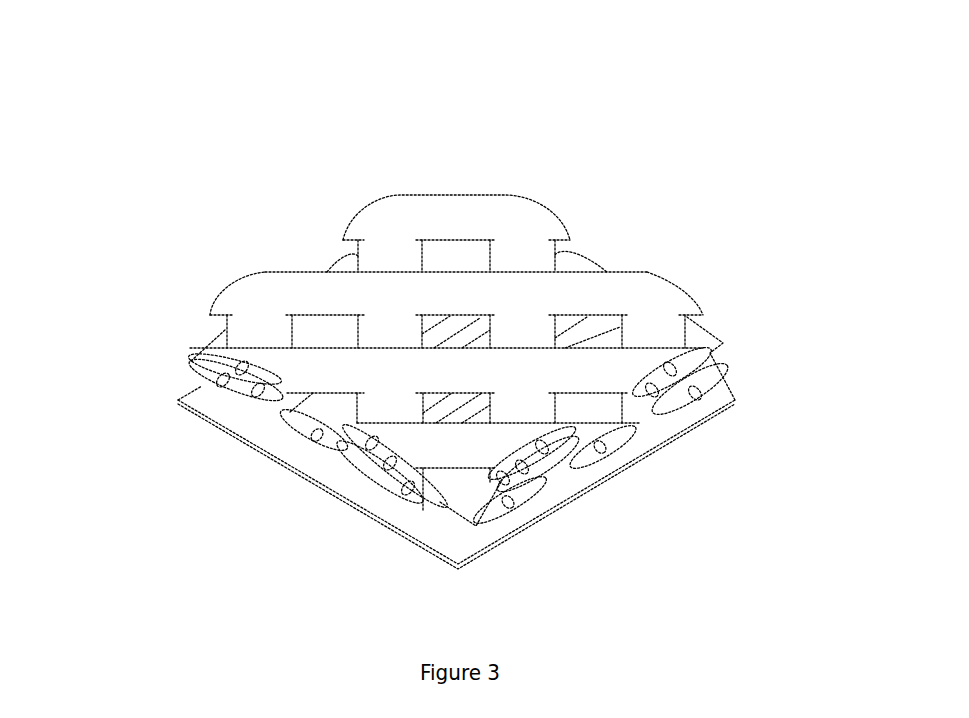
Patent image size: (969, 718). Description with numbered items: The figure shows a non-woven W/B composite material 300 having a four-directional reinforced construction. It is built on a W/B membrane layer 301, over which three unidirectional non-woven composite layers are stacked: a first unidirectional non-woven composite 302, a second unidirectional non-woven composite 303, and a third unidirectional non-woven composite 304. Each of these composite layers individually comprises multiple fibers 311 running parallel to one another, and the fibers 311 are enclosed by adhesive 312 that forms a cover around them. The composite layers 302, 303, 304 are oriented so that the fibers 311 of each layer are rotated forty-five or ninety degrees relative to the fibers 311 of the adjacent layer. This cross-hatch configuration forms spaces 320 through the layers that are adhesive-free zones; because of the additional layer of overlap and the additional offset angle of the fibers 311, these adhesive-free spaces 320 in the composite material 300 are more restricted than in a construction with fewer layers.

The non-woven W/B composite material 300 is at (626, 51).
The W/B membrane layer 301 is at (572, 480).
The first unidirectional non-woven composite 302 is at (429, 365).
The second unidirectional non-woven composite 303 is at (705, 348).
The third unidirectional non-woven composite 304 is at (648, 297).
The fibers 311 is at (407, 508).
The adhesive 312 is at (495, 507).
The spaces 320 is at (447, 412).